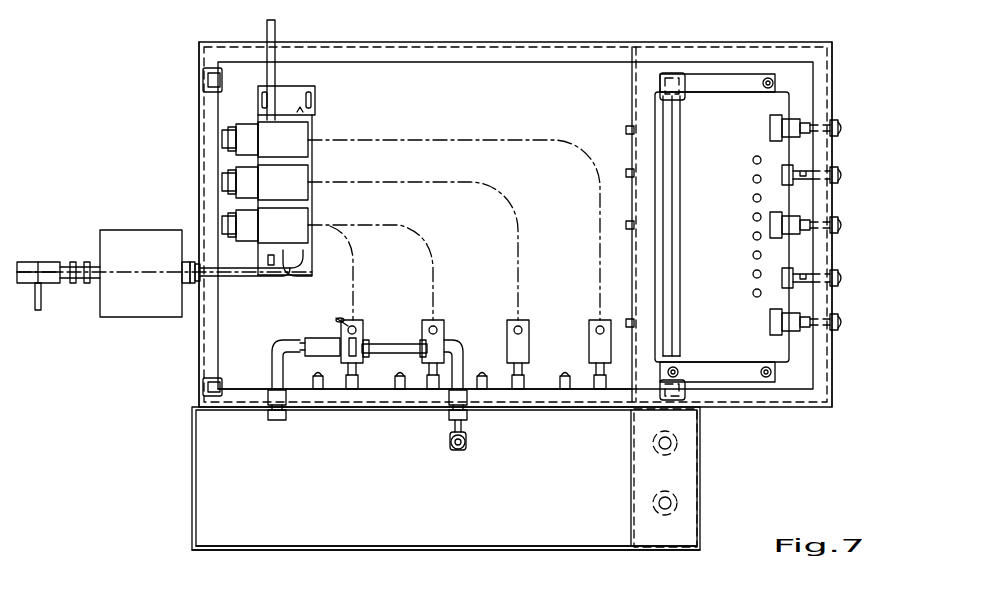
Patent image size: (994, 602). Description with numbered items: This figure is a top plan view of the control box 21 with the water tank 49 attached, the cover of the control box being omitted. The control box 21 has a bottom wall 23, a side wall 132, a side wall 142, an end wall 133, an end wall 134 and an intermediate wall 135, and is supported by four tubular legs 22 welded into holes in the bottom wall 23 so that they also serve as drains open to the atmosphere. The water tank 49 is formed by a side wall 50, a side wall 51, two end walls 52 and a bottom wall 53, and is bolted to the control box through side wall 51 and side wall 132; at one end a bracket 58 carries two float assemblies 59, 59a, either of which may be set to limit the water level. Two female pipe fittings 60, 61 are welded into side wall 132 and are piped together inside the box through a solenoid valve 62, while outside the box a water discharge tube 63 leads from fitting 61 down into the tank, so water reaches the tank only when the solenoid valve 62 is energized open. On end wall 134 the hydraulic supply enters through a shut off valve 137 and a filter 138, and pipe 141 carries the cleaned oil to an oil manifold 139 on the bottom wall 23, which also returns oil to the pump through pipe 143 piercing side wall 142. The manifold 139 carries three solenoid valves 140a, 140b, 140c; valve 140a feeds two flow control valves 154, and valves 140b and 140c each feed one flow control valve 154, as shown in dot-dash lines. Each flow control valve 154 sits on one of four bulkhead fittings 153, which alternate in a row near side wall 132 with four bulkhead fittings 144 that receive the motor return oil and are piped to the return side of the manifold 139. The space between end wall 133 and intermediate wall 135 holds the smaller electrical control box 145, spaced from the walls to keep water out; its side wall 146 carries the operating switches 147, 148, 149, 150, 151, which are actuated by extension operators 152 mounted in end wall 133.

The control box 21 is at (432, 38).
The tubular legs 22 is at (205, 66).
The bottom wall 23 is at (484, 80).
The water tank 49 is at (192, 446).
The side wall 50 is at (305, 548).
The side wall 51 is at (422, 407).
The end walls 52 is at (198, 504).
The bottom wall 53 is at (548, 522).
The bracket 58 is at (630, 453).
The float assembly 59 is at (678, 500).
The float assembly 59a is at (678, 440).
The female pipe fitting 60 is at (280, 421).
The female pipe fitting 61 is at (468, 412).
The solenoid valve 62 is at (342, 336).
The water discharge tube 63 is at (470, 446).
The side wall 132 is at (243, 388).
The end wall 133 is at (833, 62).
The end wall 134 is at (198, 120).
The intermediate wall 135 is at (631, 88).
The shut off valve 137 is at (38, 262).
The filter 138 is at (148, 229).
The oil manifold 139 is at (315, 203).
The solenoid valve 140a is at (313, 222).
The solenoid valve 140b is at (313, 170).
The solenoid valve 140c is at (315, 128).
The pipe 141 is at (224, 278).
The side wall 142 is at (392, 42).
The pipe 143 is at (277, 24).
The bulkhead fittings 144 is at (320, 365).
The electrical control box 145 is at (712, 90).
The side wall 146 is at (790, 98).
The operating switch 147 is at (808, 320).
The operating switch 148 is at (795, 270).
The operating switch 149 is at (808, 222).
The operating switch 150 is at (795, 172).
The operating switch 151 is at (808, 125).
The extension operators 152 is at (833, 128).
The bulkhead fittings 153 is at (345, 380).
The flow control valve 154 is at (358, 320).